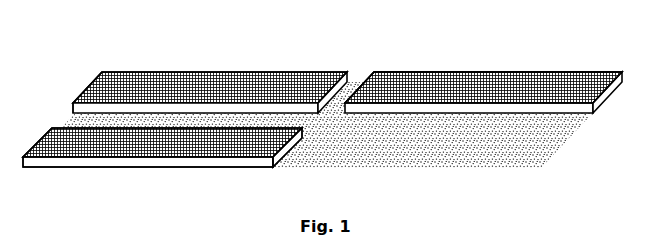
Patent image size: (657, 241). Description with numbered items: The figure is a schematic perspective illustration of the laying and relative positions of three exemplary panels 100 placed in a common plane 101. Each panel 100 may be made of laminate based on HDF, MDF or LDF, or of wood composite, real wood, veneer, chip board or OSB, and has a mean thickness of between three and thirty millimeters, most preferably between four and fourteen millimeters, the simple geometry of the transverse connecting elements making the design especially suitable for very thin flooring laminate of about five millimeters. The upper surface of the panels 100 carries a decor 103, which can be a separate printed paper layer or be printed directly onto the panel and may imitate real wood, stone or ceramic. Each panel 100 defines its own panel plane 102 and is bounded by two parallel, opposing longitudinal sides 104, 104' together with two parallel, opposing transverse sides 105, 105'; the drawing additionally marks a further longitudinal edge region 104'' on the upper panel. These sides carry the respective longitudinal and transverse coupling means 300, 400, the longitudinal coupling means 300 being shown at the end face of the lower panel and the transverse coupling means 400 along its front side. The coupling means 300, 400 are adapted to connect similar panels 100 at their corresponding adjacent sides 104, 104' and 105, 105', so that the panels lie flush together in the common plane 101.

The panel 100 is at (231, 70).
The common plane 101 is at (537, 146).
The panel plane 102 is at (422, 73).
The decor 103 is at (510, 82).
The longitudinal side 104 is at (57, 85).
The opposing longitudinal side 104' is at (31, 116).
The back corner edge of plate 104'' is at (77, 61).
The transverse side 105 is at (319, 68).
The opposing transverse side 105' is at (374, 68).
The longitudinal coupling means 300 is at (307, 147).
The transverse coupling means 400 is at (173, 180).